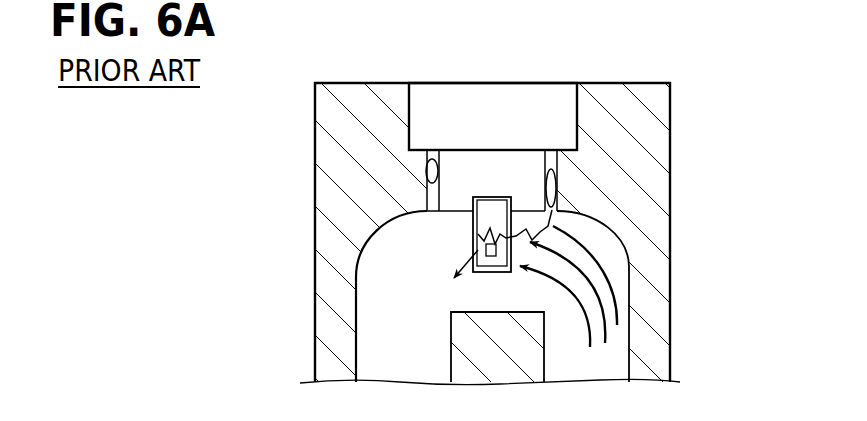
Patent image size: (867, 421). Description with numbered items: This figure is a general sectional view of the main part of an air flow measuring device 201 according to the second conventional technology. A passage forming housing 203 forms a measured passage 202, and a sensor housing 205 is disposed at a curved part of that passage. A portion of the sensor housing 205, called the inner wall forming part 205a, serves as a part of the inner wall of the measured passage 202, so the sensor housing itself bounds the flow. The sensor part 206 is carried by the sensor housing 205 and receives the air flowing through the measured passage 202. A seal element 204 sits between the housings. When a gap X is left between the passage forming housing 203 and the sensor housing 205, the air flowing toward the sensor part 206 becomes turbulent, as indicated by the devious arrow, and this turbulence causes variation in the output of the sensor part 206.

The air flow measuring device 201 is at (645, 60).
The measured passage 202 is at (590, 382).
The passage forming housing 203 is at (368, 98).
The seal / O-ring 204 is at (428, 182).
The sensor housing 205 is at (455, 98).
The inner wall forming part 205a is at (448, 211).
The sensor part 206 is at (476, 234).
The gap X is at (556, 190).